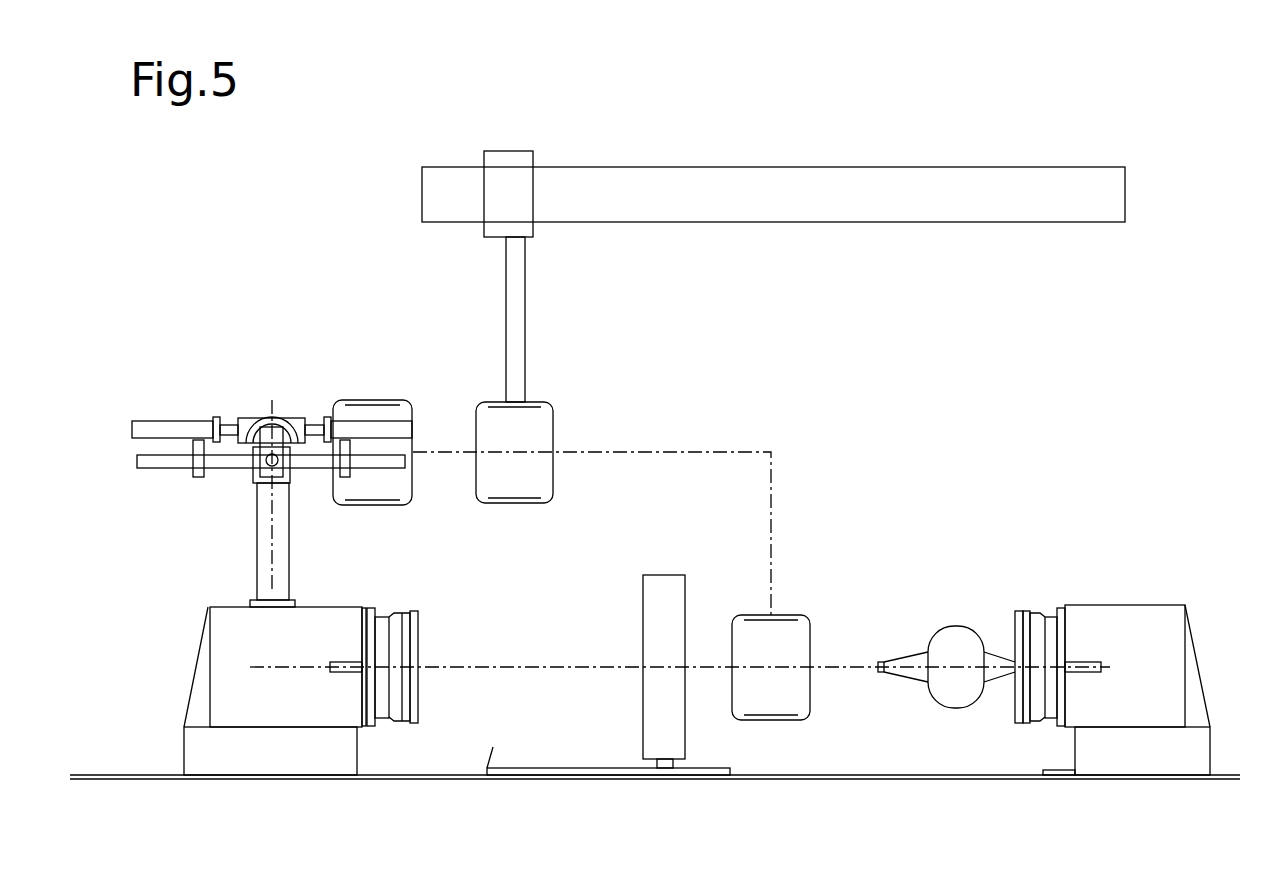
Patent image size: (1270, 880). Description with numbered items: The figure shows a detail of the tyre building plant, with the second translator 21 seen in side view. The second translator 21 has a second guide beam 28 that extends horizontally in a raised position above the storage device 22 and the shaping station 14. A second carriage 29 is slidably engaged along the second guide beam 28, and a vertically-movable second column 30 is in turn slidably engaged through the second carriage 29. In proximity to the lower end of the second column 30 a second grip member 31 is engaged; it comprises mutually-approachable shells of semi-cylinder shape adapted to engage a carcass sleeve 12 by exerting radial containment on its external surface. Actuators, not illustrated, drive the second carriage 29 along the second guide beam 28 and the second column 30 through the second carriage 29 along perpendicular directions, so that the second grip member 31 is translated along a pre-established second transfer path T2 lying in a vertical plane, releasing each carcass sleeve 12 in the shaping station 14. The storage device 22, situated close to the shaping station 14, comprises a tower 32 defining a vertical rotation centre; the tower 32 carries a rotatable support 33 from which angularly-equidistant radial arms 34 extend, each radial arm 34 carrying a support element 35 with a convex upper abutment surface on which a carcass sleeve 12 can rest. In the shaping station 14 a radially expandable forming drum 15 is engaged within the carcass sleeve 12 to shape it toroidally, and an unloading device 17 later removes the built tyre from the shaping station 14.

The second translator 21 is at (773, 128).
The second guide beam 28 is at (773, 197).
The second carriage 29 is at (510, 192).
The second column 30 is at (515, 268).
The second grip member 31 is at (535, 400).
The storage device 22 is at (256, 407).
The support element 35 is at (175, 420).
The radial arm 34 is at (152, 462).
The rotatable support 33 is at (258, 470).
The tower 32 is at (262, 525).
The carcass sleeve 12 is at (405, 500).
The second transfer path T2 is at (660, 452).
The unloading device 17 is at (663, 575).
The forming drum 15 is at (956, 626).
The shaping station 14 is at (927, 788).